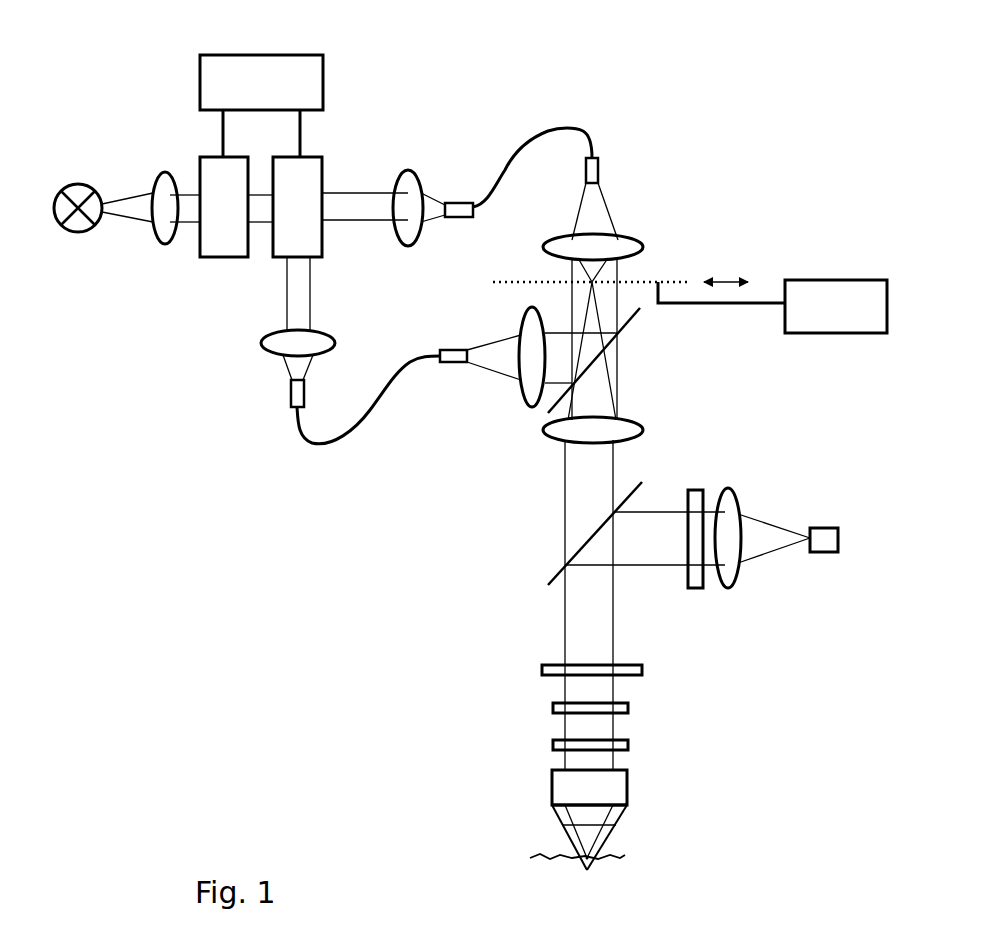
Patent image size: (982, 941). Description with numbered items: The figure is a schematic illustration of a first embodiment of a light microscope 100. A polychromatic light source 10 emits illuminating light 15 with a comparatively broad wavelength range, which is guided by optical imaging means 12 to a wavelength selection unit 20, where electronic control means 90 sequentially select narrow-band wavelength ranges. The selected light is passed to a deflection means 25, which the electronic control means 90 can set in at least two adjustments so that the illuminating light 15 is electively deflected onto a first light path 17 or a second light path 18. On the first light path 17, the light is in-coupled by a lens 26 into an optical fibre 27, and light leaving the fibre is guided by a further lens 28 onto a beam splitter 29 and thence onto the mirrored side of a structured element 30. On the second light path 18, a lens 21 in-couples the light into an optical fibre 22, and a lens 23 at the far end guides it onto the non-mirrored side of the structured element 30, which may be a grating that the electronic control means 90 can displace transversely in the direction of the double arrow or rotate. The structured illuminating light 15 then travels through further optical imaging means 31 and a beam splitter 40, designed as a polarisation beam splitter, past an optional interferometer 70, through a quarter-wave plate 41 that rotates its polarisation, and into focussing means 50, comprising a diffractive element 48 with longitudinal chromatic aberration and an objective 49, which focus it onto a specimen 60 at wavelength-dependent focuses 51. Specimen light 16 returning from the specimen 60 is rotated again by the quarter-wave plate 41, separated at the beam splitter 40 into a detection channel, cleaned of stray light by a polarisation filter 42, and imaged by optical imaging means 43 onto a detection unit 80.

The light microscope 100 is at (668, 68).
The polychromatic light source 10 is at (86, 186).
The optical imaging means 12 is at (163, 180).
The illuminating light 15 is at (128, 212).
The specimen light 16 is at (655, 536).
The first light path 17 is at (290, 290).
The second light path 18 is at (353, 207).
The wavelength selection unit 20 is at (238, 220).
The lens 21 is at (409, 192).
The optical fibre 22 is at (520, 145).
The lens 23 is at (640, 245).
The deflection means 25 is at (312, 212).
The lens 26 is at (275, 344).
The optical fibre 27 is at (297, 447).
The further lens 28 is at (520, 392).
The beam splitter 29 is at (617, 335).
The structured element 30 is at (522, 280).
The further optical imaging means 31 is at (545, 430).
The beam splitter 40 is at (548, 580).
The λ/4 plate 41 is at (630, 705).
The polarisation filter 42 is at (696, 490).
The optical imaging means 43 is at (728, 490).
The diffractive element 48 is at (552, 745).
The objective 49 is at (556, 808).
The focussing means 50 is at (487, 725).
The focuses 51 is at (592, 862).
The specimen 60 is at (530, 857).
The interferometer 70 is at (543, 668).
The detection unit 80 is at (822, 528).
The electronic control means 90 is at (268, 94).